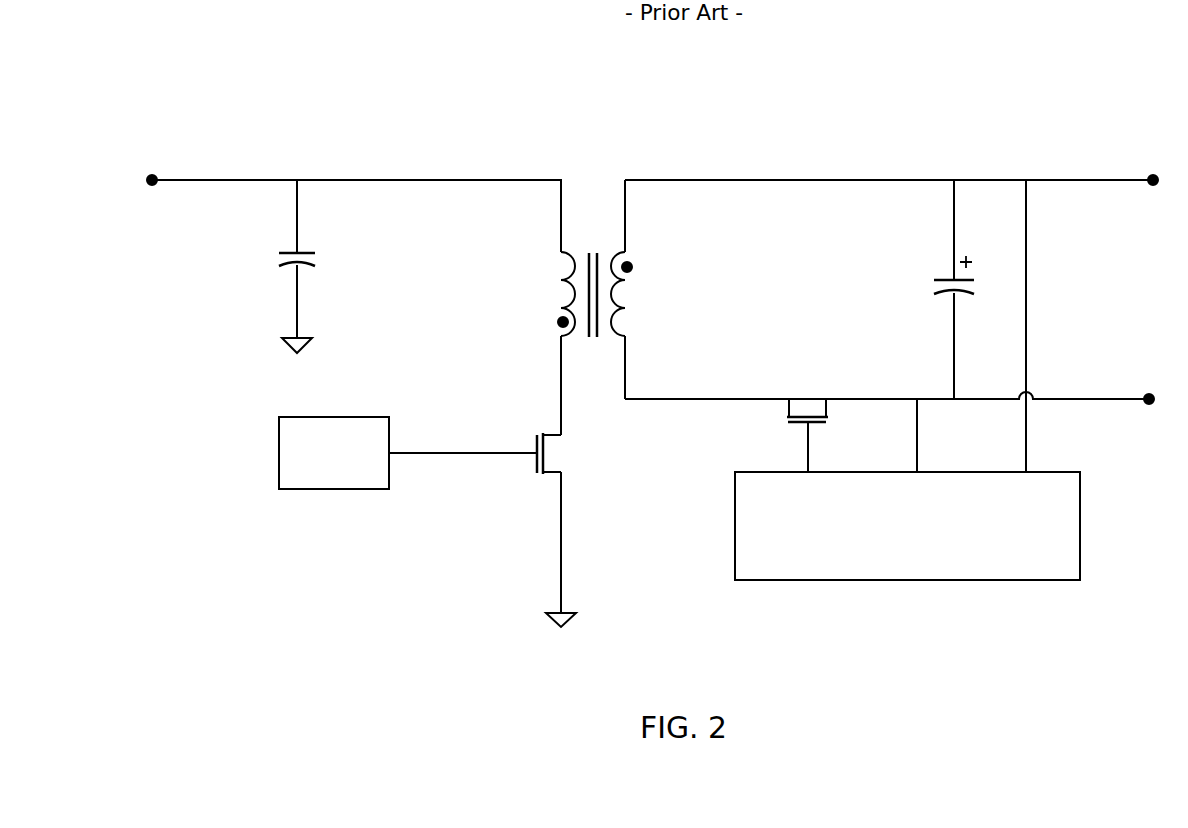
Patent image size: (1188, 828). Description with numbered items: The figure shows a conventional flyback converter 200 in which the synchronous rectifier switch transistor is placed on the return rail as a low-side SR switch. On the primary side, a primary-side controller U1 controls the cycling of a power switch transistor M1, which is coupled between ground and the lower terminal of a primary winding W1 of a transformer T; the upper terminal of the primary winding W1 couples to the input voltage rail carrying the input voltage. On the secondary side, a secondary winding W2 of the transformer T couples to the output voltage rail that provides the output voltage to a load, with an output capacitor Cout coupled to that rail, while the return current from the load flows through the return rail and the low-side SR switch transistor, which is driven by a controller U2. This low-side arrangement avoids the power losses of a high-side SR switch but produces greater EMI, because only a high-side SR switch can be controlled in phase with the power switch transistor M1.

The flyback converter 200 is at (548, 97).
The transformer T is at (595, 251).
The primary winding W1 is at (544, 294).
The secondary winding W2 is at (644, 294).
The power switch transistor M1 is at (566, 453).
The primary-side controller U1 is at (334, 453).
The synchronous rectifier controller U2 is at (907, 526).
The output capacitor Cout is at (325, 266).